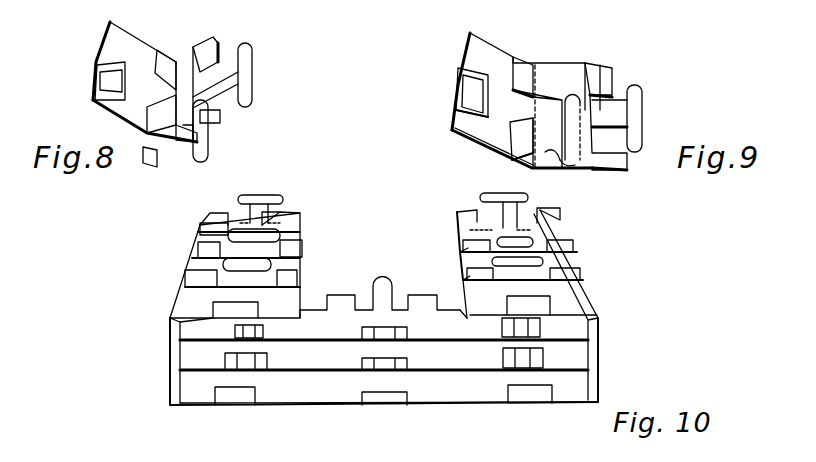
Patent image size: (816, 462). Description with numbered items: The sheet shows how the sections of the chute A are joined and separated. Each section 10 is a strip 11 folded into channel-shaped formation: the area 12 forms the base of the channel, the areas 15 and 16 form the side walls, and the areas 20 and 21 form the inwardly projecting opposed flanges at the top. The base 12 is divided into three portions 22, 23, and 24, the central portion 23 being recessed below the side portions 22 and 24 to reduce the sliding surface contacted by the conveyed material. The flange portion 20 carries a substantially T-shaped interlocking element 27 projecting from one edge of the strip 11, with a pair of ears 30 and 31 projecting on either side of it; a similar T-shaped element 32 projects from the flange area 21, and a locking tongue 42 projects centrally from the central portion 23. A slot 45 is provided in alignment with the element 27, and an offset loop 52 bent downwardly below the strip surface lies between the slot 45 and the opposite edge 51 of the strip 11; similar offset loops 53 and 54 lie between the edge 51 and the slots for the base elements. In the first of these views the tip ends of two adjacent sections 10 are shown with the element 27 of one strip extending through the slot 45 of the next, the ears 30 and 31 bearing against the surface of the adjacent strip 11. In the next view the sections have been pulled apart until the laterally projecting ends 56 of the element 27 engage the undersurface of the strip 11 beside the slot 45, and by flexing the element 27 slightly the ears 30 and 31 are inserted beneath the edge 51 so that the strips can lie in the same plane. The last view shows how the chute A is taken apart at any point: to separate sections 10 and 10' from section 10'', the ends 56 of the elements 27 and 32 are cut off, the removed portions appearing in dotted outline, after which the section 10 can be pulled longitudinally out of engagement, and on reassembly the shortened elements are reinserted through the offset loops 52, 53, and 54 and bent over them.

In FIG. 8, the chute section 10 is at (116, 76).
In FIG. 9, the chute section 10 is at (500, 92).
In FIG. 10, the chute section 10 is at (568, 260).
In FIG. 10, the chute section 10' is at (577, 294).
In FIG. 10, the chute section 10'' is at (561, 230).
In FIG. 8, the strip 11 is at (117, 41).
In FIG. 9, the strip 11 is at (477, 52).
In FIG. 10, the base 12 is at (285, 392).
In FIG. 10, the side wall 15 is at (180, 345).
In FIG. 10, the side wall 16 is at (590, 347).
In FIG. 10, the flange 20 is at (292, 303).
In FIG. 10, the flange 21 is at (465, 263).
In FIG. 10, the base side portion 22 is at (197, 390).
In FIG. 10, the central base portion 23 is at (440, 397).
In FIG. 10, the base side portion 24 is at (495, 392).
In FIG. 8, the T-shaped interlocking element 27 is at (243, 73).
In FIG. 9, the T-shaped interlocking element 27 is at (542, 117).
In FIG. 10, the T-shaped interlocking element 27 is at (260, 218).
In FIG. 8, the ear 30 is at (192, 23).
In FIG. 9, the ear 30 is at (522, 63).
In FIG. 10, the ear 30 is at (300, 212).
In FIG. 8, the ear 31 is at (212, 117).
In FIG. 9, the ear 31 is at (520, 154).
In FIG. 10, the ear 31 is at (203, 223).
In FIG. 10, the T-shaped element 32 is at (480, 197).
In FIG. 10, the locking tongue 42 is at (380, 368).
In FIG. 8, the slot 45 is at (118, 82).
In FIG. 9, the slot 45 is at (482, 90).
In FIG. 9, the strip edge 51 is at (448, 120).
In FIG. 8, the offset loop 52 is at (103, 72).
In FIG. 9, the offset loop 52 is at (465, 97).
In FIG. 10, the offset loop 52 is at (190, 461).
In FIG. 10, the offset loop 53 is at (240, 397).
In FIG. 10, the offset loop 54 is at (533, 397).
In FIG. 9, the laterally projecting end 56 is at (607, 68).
In FIG. 10, the laterally projecting end 56 is at (240, 222).
In FIG. 10, the chute A is at (170, 297).